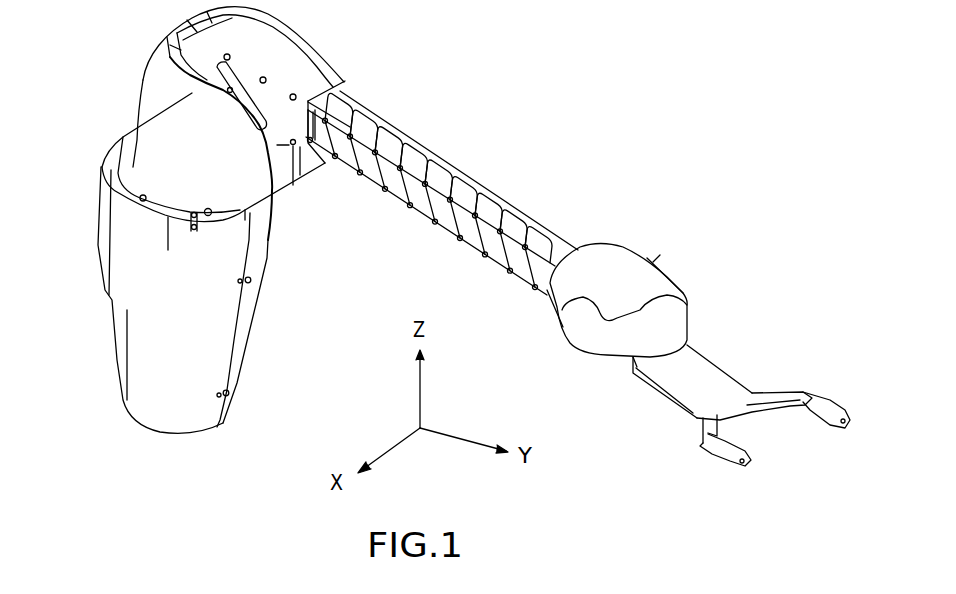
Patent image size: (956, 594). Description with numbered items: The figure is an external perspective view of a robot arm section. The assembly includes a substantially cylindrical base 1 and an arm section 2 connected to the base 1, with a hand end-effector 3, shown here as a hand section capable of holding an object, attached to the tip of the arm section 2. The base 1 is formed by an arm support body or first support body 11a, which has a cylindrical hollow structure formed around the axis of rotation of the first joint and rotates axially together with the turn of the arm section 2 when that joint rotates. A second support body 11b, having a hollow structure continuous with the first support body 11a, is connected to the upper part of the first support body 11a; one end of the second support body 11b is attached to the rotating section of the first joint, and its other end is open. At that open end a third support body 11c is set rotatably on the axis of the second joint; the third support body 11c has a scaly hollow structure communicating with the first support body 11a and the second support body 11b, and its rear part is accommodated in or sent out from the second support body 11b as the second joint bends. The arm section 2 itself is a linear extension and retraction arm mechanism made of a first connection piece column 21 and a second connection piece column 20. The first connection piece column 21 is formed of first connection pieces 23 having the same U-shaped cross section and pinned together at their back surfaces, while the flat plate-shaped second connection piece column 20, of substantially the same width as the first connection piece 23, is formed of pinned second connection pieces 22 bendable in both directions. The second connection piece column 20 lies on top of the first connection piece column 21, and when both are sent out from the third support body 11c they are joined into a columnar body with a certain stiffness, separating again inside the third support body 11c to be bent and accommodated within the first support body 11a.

The base 1 is at (97, 338).
The arm support body (first support body) 11a is at (120, 247).
The second support body 11b is at (155, 84).
The third support body 11c is at (294, 36).
The arm section 2 is at (379, 66).
The second connection piece column 20 is at (500, 189).
The first connection piece column 21 is at (418, 218).
The second connection piece 22 is at (430, 157).
The first connection piece 23 is at (377, 173).
The hand end-effector 3 is at (728, 356).